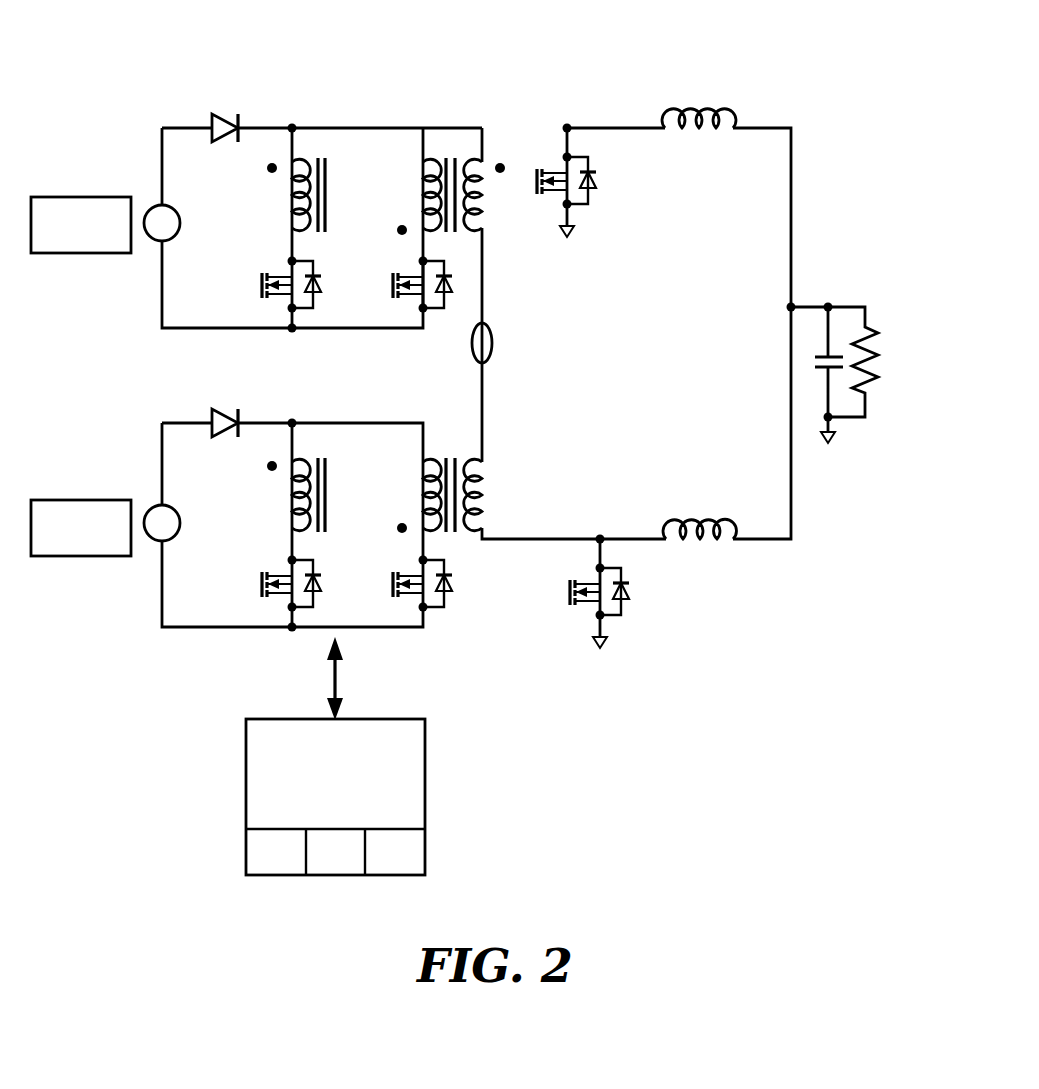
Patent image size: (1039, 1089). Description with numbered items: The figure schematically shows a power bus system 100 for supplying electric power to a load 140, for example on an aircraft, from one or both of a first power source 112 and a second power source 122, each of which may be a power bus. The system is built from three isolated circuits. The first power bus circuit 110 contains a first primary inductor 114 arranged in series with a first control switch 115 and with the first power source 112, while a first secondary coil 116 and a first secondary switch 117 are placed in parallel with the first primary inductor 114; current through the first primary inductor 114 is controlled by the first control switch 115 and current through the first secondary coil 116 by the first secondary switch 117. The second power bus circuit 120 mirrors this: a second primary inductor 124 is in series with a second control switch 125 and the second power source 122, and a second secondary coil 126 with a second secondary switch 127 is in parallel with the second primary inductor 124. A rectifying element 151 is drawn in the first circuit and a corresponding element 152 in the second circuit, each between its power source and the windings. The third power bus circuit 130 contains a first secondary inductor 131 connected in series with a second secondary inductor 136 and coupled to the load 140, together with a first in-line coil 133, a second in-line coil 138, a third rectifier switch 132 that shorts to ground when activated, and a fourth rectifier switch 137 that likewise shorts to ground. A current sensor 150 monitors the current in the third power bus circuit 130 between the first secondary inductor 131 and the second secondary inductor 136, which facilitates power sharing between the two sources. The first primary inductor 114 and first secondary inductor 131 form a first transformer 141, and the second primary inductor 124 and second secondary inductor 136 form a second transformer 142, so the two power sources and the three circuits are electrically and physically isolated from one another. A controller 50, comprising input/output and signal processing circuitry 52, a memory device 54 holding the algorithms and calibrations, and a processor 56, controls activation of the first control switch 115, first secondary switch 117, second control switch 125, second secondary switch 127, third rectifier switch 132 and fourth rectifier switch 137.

The power bus system 100 is at (800, 68).
The first power bus circuit 110 is at (323, 117).
The first power source 112 is at (156, 243).
The first primary inductor 114 is at (436, 190).
The first control switch 115 is at (444, 300).
The first secondary coil 116 is at (297, 207).
The first secondary switch 117 is at (313, 300).
The second power bus circuit 120 is at (305, 412).
The second power source 122 is at (156, 543).
The second primary inductor 124 is at (436, 487).
The second control switch 125 is at (444, 598).
The second secondary coil 126 is at (297, 503).
The second secondary switch 127 is at (313, 598).
The third power bus circuit 130 is at (597, 117).
The first secondary inductor 131 is at (475, 205).
The third rectifier switch 132 is at (588, 195).
The first in-line coil 133 is at (708, 108).
The second secondary inductor 136 is at (475, 487).
The fourth rectifier switch 137 is at (622, 610).
The second in-line coil 138 is at (708, 520).
The load 140 is at (852, 325).
The first transformer T1 141 is at (474, 156).
The second transformer T2 142 is at (474, 454).
The current sensor 150 is at (493, 343).
The first input diode 151 is at (212, 124).
The second input diode 152 is at (212, 426).
The controller 50 is at (350, 799).
The input/output and signal processing circuitry 52 is at (290, 862).
The memory device 54 is at (350, 862).
The processor 56 is at (410, 862).